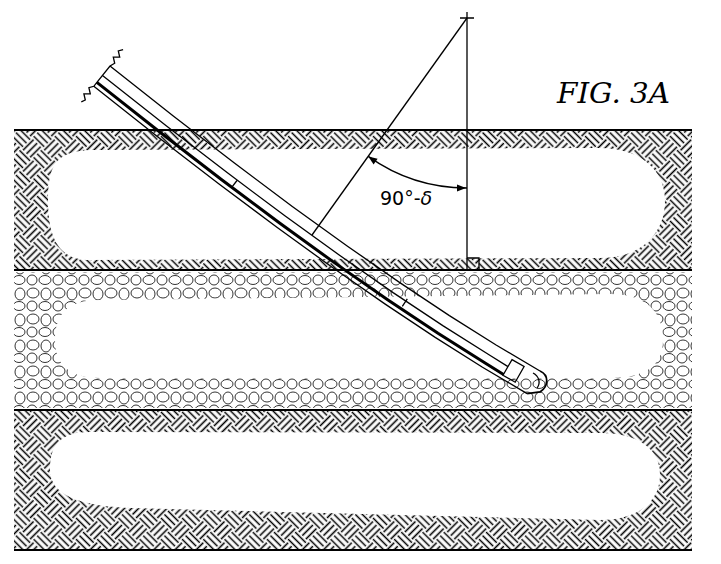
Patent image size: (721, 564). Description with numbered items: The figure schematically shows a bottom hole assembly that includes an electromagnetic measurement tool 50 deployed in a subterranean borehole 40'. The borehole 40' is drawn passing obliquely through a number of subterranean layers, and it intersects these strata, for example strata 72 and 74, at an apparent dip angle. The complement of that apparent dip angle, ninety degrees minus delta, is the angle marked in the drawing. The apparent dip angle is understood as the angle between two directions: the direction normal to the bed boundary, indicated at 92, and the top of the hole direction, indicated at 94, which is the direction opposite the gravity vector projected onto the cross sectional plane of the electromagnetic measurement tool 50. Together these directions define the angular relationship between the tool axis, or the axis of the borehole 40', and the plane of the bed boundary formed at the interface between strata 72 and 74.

The subterranean borehole 40' is at (313, 222).
The electromagnetic measurement tool 50 is at (383, 292).
The stratum 72 is at (600, 214).
The stratum 74 is at (607, 337).
The direction normal to the boundary 92 is at (468, 213).
The top of the hole direction 94 is at (342, 193).